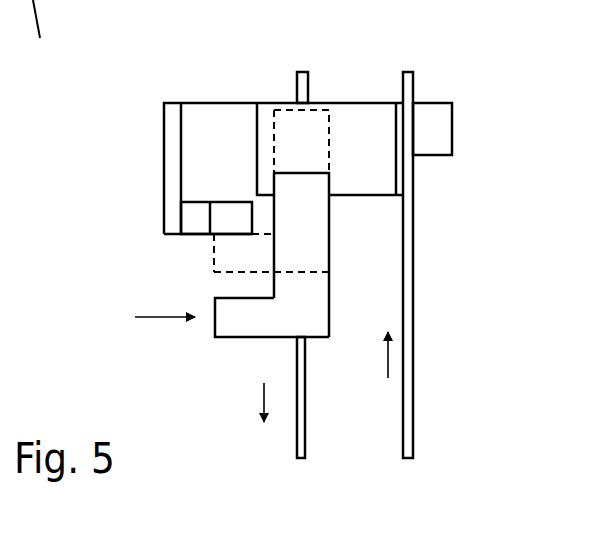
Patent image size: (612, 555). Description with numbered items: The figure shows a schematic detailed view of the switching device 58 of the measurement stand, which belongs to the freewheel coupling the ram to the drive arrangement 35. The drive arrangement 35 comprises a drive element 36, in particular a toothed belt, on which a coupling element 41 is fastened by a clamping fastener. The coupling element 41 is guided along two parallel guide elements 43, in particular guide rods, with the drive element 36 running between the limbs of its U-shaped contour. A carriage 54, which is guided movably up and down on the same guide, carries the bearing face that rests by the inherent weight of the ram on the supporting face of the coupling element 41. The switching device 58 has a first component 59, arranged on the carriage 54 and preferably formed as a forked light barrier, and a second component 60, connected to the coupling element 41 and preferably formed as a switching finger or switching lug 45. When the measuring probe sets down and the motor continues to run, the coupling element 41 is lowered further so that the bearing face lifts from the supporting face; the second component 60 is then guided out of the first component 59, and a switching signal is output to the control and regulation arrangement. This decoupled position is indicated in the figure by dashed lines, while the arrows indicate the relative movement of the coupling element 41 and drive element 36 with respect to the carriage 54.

The drive arrangement 35 is at (438, 212).
The drive element 36 is at (298, 430).
The coupling element 41 is at (318, 338).
The guide elements 43 is at (408, 78).
The switching lug 45 is at (433, 133).
The carriage 54 is at (193, 154).
The switching device 58 is at (196, 250).
The first component 59 is at (222, 216).
The second component 60 is at (235, 338).